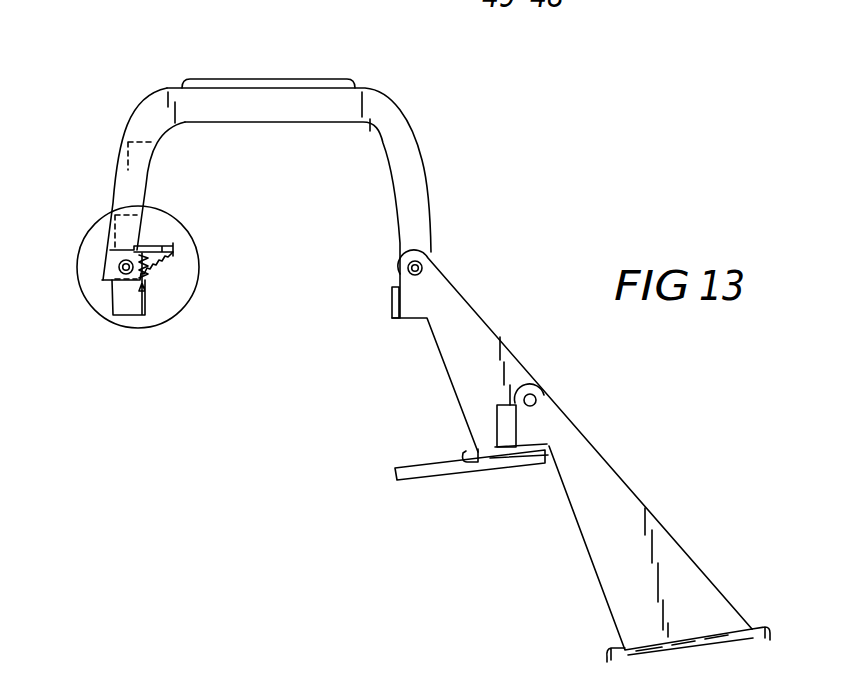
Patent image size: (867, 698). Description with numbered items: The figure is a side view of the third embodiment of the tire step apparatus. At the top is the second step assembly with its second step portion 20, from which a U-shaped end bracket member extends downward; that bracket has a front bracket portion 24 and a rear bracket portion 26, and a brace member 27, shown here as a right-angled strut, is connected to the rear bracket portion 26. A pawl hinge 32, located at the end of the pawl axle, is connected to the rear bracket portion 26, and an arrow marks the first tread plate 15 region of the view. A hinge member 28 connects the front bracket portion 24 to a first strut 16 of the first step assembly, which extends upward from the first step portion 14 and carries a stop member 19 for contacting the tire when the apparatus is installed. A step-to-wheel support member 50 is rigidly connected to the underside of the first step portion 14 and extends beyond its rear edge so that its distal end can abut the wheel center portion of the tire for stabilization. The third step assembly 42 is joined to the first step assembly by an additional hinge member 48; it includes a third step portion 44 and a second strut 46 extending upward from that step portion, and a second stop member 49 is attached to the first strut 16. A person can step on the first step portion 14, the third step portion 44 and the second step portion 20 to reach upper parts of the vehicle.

The first step portion 14 is at (465, 453).
The first tread plate 15 is at (131, 328).
The first struts 16 is at (458, 308).
The stop member 19 is at (392, 310).
The second step portion 20 is at (253, 79).
The front bracket portion 24 is at (410, 163).
The rear bracket portion 26 is at (113, 188).
The brace member 27 is at (128, 117).
The hinge member 28 is at (404, 270).
The pawl hinge 32 is at (103, 280).
The third step assembly 42 is at (677, 519).
The third step portion 44 is at (753, 625).
The second struts 46 is at (605, 483).
The additional hinge members 48 is at (543, 392).
The second stop members 49 is at (505, 440).
The step-to-wheel support members 50 is at (433, 477).